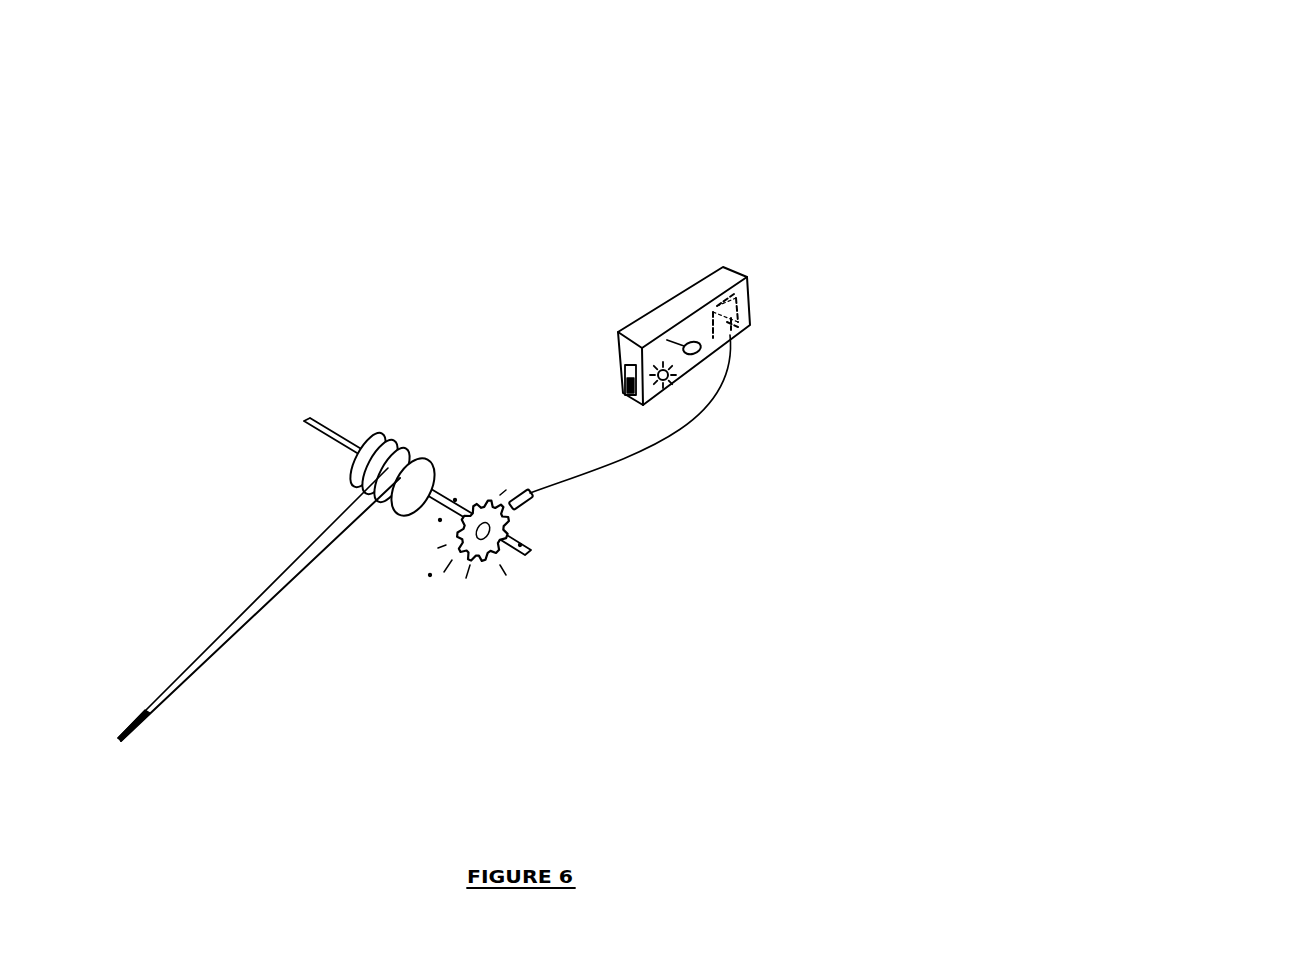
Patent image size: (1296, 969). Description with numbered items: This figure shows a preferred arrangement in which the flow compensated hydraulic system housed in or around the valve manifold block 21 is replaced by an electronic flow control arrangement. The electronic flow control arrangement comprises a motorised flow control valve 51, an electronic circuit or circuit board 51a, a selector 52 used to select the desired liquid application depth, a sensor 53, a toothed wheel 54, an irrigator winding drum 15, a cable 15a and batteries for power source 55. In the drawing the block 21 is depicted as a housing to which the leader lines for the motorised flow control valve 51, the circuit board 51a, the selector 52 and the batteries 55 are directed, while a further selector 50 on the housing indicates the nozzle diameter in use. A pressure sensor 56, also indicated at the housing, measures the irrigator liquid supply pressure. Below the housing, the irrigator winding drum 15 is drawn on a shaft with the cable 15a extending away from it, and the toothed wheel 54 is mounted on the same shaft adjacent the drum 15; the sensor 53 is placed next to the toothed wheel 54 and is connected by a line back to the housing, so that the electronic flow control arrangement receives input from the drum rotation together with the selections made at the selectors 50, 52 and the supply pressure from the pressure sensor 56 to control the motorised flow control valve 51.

The valve manifold block 21 is at (660, 299).
The selector 50 is at (692, 338).
The motorised flow control valve 51 is at (735, 319).
The electronic circuit or circuit board 51a is at (748, 318).
The pressure sensor 56 is at (750, 323).
The selector 52 is at (668, 393).
The sensor 53 is at (533, 505).
The toothed wheel 54 is at (490, 566).
The batteries for power source 55 is at (606, 390).
The irrigator winding drum 15 is at (401, 512).
The cable 15a is at (190, 677).